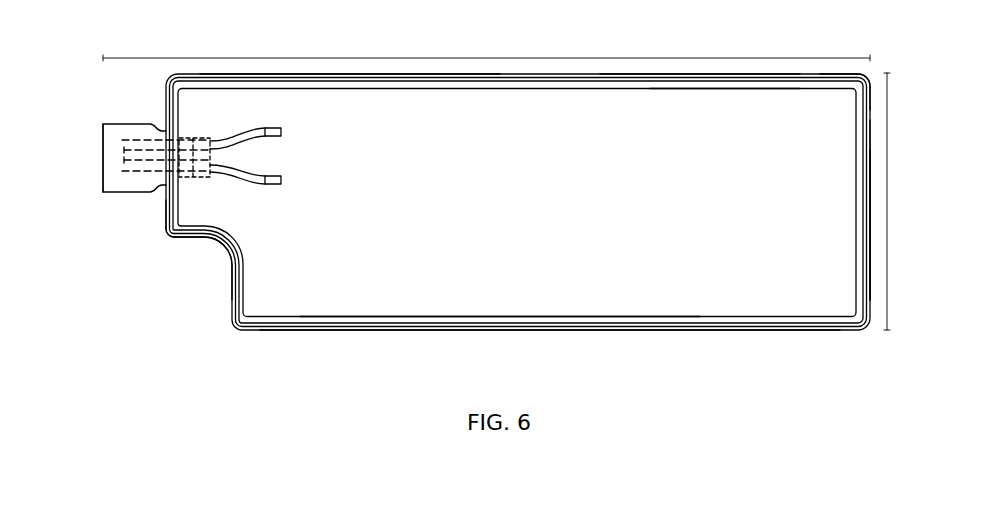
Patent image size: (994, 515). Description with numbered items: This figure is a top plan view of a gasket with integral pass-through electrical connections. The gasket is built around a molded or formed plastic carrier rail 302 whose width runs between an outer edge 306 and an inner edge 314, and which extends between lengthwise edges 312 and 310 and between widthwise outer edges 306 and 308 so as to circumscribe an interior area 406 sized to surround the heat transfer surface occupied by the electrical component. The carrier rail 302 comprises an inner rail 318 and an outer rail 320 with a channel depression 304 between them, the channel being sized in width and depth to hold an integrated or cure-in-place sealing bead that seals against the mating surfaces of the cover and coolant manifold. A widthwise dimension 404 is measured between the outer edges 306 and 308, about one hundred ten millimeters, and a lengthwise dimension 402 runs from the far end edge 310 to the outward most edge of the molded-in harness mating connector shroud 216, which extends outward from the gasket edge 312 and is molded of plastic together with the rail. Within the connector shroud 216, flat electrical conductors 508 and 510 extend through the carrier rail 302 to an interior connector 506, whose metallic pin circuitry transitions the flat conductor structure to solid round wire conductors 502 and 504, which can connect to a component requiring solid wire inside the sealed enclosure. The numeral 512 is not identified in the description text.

The molded-in harness mating connector shroud 216 is at (118, 192).
The carrier rail 302 is at (552, 88).
The channel depression 304 is at (716, 74).
The outer edge 306 is at (383, 76).
The outer edge 308 is at (735, 332).
The lengthwise edge 310 is at (870, 210).
The lengthwise edge 312 is at (165, 233).
The inner edge 314 is at (395, 90).
The inner rail 318 is at (742, 90).
The outer rail 320 is at (760, 74).
The lengthwise dimension 402 is at (211, 58).
The widthwise dimension 404 is at (887, 150).
The interior area 406 is at (413, 263).
The wire conductor 502 is at (282, 132).
The wire conductor 504 is at (282, 181).
The interior connector 506 is at (196, 178).
The electrical conductor 508 is at (120, 141).
The electrical conductor 510 is at (110, 170).
The conductor 512 is at (110, 150).